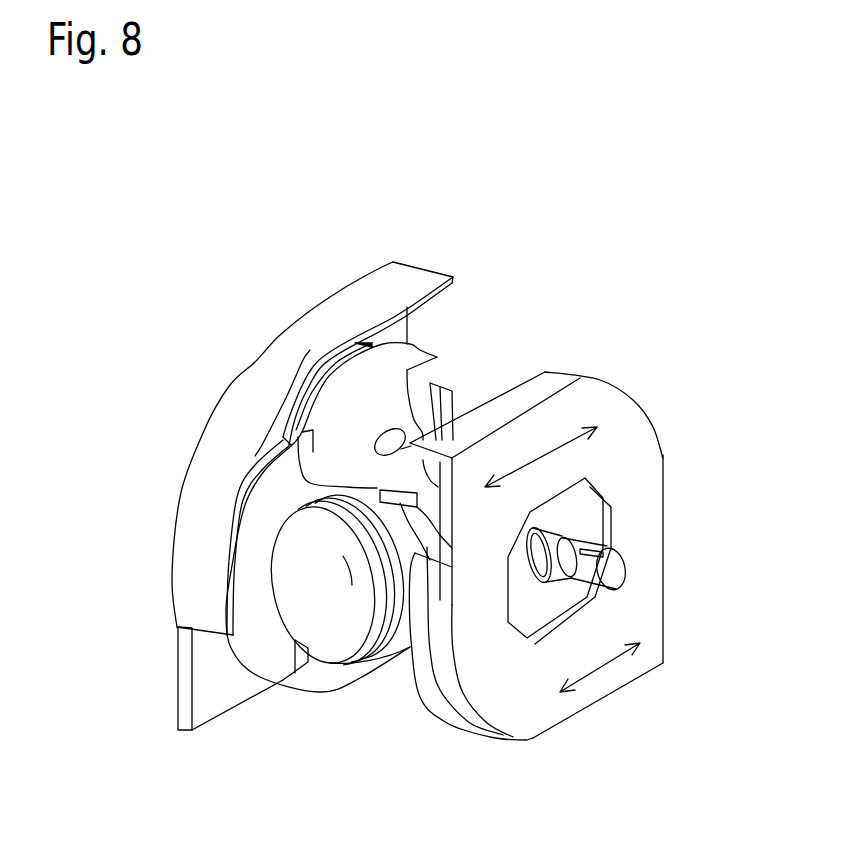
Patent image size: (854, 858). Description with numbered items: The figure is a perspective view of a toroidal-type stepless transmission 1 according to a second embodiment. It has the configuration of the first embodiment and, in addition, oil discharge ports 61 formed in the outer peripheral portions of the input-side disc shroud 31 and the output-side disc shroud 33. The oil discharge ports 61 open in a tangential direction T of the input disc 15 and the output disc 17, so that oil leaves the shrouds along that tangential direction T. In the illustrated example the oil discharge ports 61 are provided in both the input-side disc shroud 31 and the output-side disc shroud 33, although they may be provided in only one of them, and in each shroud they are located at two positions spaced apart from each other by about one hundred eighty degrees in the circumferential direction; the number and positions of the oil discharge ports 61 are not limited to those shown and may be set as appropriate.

The stepless transmission 1 is at (180, 227).
The input disc 15 is at (432, 553).
The output disc 17 is at (247, 658).
The input-side disc shroud 31 is at (560, 373).
The output-side disc shroud 33 is at (345, 287).
The oil discharge port 61 is at (407, 322).
The tangential direction T is at (612, 660).